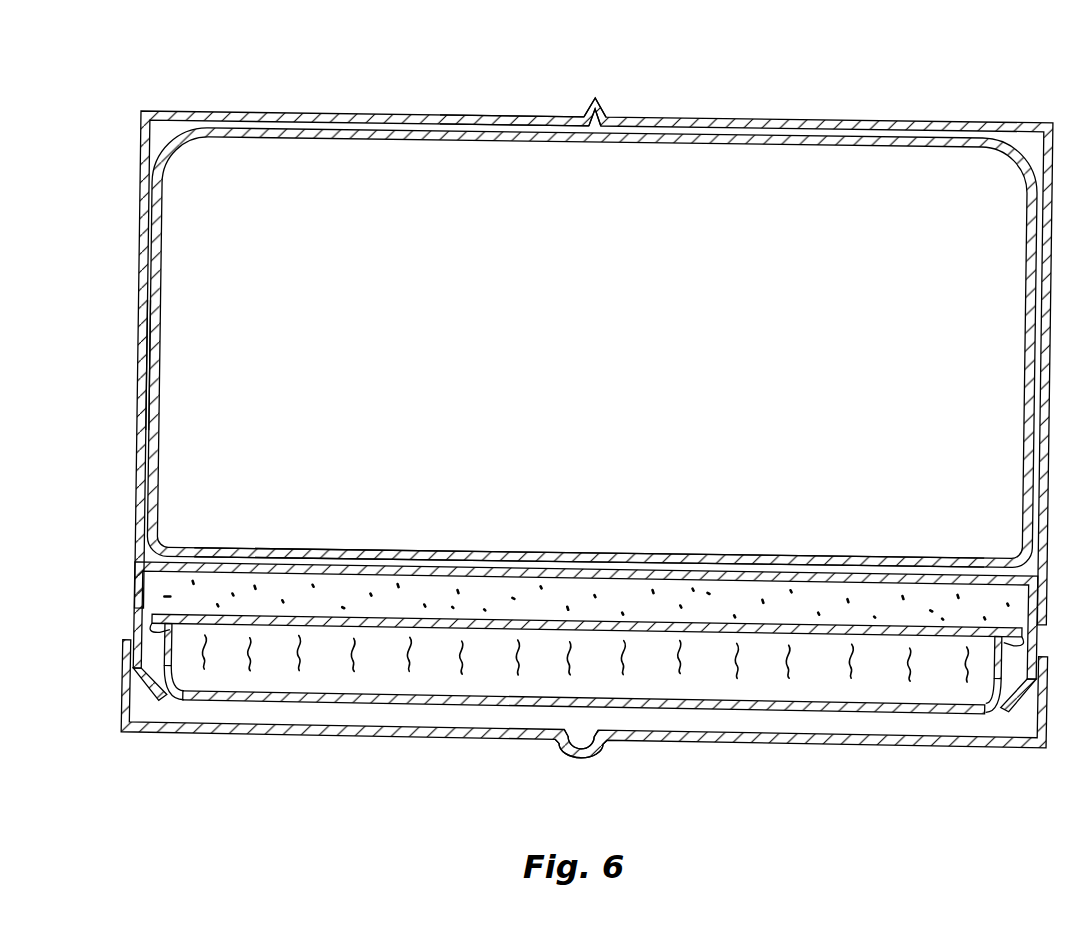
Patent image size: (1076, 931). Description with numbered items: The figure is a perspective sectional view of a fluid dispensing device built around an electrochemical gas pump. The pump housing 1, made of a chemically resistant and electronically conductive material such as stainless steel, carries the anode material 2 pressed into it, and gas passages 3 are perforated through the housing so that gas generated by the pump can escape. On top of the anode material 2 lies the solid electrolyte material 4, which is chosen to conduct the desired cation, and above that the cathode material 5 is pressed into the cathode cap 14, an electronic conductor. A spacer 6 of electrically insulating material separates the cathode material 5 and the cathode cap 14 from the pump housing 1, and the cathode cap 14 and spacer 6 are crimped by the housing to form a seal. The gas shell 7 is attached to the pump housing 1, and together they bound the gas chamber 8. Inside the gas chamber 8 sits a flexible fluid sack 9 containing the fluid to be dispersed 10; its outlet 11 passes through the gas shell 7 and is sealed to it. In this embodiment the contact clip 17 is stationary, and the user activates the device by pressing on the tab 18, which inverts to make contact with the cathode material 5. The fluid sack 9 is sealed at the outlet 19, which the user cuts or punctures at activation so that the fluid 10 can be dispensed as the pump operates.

The pump housing 1 is at (142, 570).
The anode material 2 is at (190, 597).
The gas passages 3 is at (207, 550).
The solid electrolyte material 4 is at (160, 627).
The cathode material 5 is at (137, 640).
The spacer 6 is at (158, 668).
The gas shell 7 is at (138, 453).
The gas chamber 8 is at (152, 385).
The fluid sack 9 is at (140, 352).
The fluid to be dispersed 10 is at (257, 308).
The outlet 11 is at (582, 117).
The cathode cap 14 is at (252, 698).
The contact clip 17 is at (320, 735).
The tab 18 is at (560, 747).
The outlet seal 19 is at (598, 94).